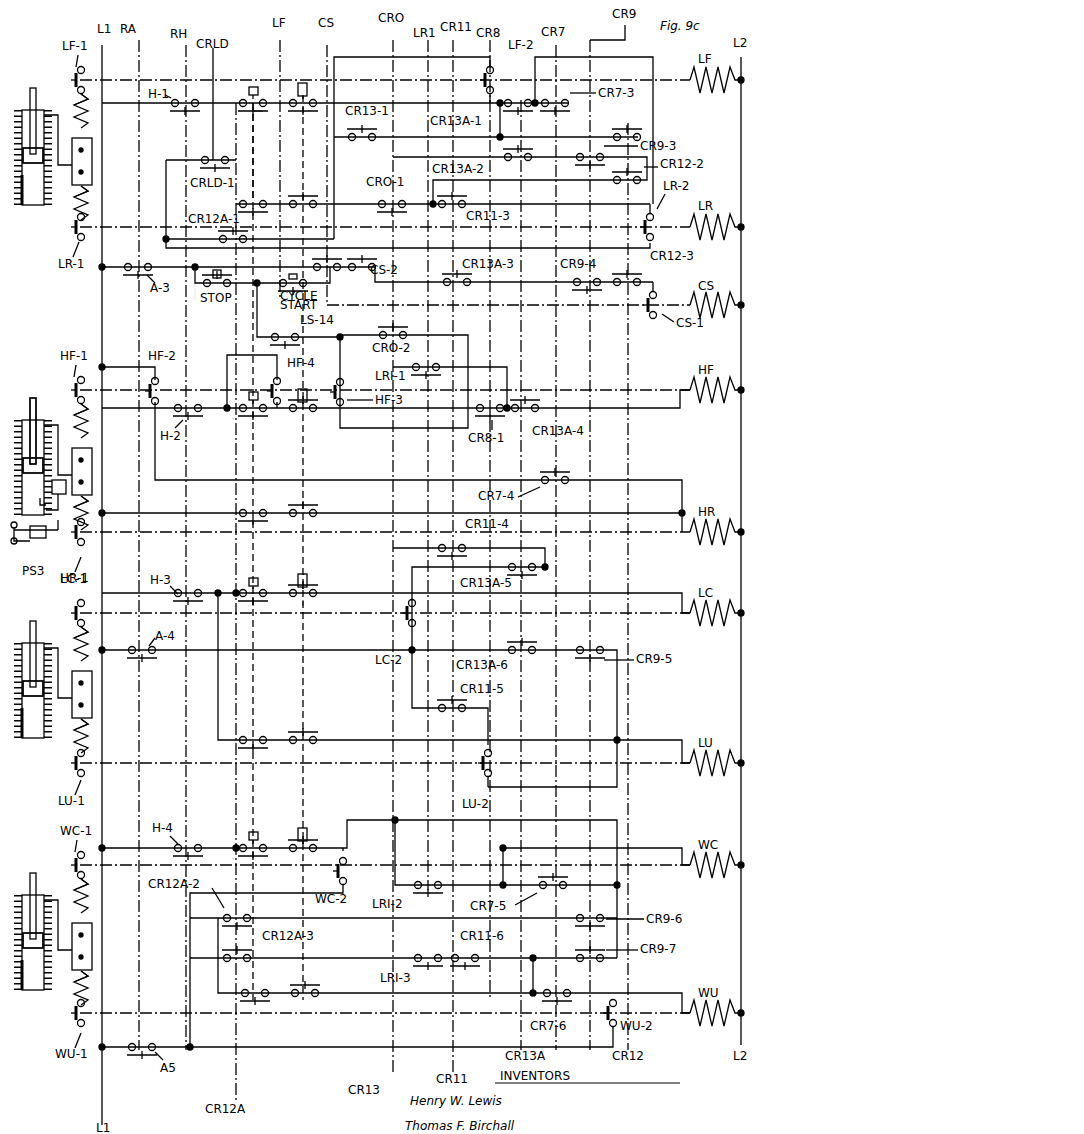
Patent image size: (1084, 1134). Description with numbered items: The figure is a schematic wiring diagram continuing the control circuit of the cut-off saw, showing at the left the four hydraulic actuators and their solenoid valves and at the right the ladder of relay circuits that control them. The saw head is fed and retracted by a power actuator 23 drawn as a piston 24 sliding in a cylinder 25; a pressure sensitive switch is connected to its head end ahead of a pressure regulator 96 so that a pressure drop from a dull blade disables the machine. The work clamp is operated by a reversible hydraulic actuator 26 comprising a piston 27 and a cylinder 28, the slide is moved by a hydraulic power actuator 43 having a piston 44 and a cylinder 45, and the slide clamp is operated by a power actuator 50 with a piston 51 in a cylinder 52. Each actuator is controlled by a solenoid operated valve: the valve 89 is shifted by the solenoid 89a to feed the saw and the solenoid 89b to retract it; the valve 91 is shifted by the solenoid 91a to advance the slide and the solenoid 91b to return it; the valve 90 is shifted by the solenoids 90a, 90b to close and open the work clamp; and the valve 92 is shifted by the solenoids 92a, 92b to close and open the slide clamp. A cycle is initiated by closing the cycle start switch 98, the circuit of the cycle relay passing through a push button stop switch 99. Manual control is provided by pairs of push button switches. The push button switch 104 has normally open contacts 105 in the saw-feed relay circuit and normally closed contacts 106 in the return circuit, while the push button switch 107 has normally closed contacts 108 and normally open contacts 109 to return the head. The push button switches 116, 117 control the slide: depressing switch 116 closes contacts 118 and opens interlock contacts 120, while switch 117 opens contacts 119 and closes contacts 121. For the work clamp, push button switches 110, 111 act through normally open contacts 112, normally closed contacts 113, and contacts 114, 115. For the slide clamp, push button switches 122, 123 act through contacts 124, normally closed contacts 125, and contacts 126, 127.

The hydraulic power actuator 43 is at (42, 110).
The piston 44 is at (43, 153).
The cylinder 45 is at (24, 202).
The solenoid operated valve 91 is at (92, 150).
The solenoid 91a is at (88, 118).
The solenoid 91b is at (88, 190).
The push button switch 116 is at (250, 88).
The push button switch 117 is at (303, 89).
The contacts 118 is at (254, 112).
The normally closed contacts 119 is at (301, 106).
The interlock contacts 120 is at (254, 202).
The contacts 121 is at (310, 210).
The cycle start switch 98 is at (290, 270).
The push button stop switch 99 is at (200, 292).
The cylinder 25 is at (32, 400).
The power actuator 23 is at (44, 415).
The piston 24 is at (45, 465).
The solenoid operated valve 89 is at (92, 460).
The solenoid 89a is at (88, 422).
The solenoid 89b is at (88, 500).
The pressure regulator 96 is at (38, 512).
The push button switch 104 is at (254, 392).
The normally open contacts 105 is at (244, 422).
The normally closed contacts 106 is at (240, 510).
The push button switch 107 is at (307, 390).
The normally closed contacts 108 is at (300, 420).
The normally open contacts 109 is at (312, 512).
The power actuator 50 is at (42, 635).
The piston 51 is at (45, 690).
The cylinder 52 is at (24, 745).
The solenoid operated valve 92 is at (92, 687).
The solenoid 92a is at (88, 655).
The solenoid 92b is at (88, 725).
The push button switch 122 is at (254, 578).
The push button switch 123 is at (305, 576).
The contacts 124 is at (256, 598).
The normally closed contacts 125 is at (310, 602).
The contacts 126 is at (313, 736).
The contacts 127 is at (256, 736).
The reversible hydraulic actuator 26 is at (44, 915).
The piston 27 is at (45, 942).
The cylinder 28 is at (24, 1000).
The solenoid operated valve 90 is at (92, 939).
The solenoid 90a is at (88, 885).
The solenoid 90b is at (88, 977).
The push button switch 110 is at (254, 832).
The push button switch 111 is at (305, 830).
The normally open contacts 112 is at (266, 846).
The normally closed contacts 113 is at (298, 856).
The contacts 114 is at (258, 1003).
The contacts 115 is at (314, 993).